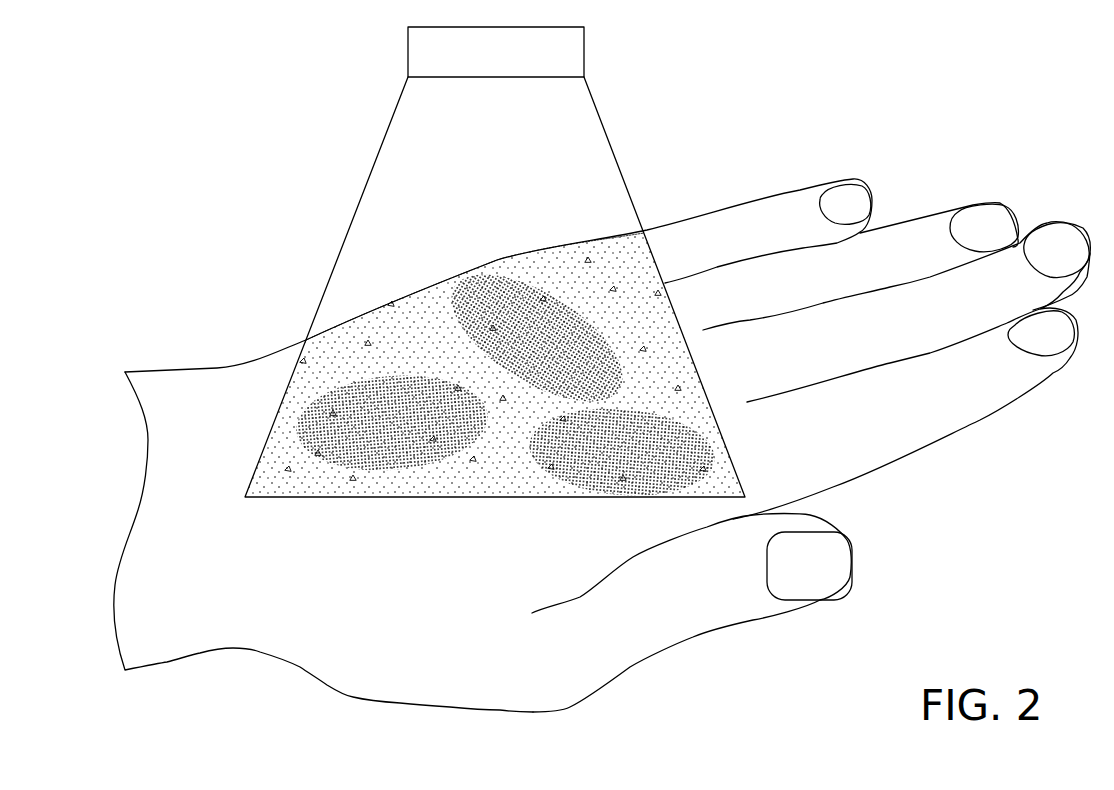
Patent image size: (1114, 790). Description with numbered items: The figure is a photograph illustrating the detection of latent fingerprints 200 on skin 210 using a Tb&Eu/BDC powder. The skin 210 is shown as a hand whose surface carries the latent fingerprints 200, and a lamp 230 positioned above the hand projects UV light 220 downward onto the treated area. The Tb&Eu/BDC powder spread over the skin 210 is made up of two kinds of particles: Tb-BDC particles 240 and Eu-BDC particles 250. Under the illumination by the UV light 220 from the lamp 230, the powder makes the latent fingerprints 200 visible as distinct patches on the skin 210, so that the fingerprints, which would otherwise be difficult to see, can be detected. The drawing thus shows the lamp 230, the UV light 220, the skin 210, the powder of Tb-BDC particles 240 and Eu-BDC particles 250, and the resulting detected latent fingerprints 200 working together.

The latent fingerprints 200 is at (547, 383).
The skin 210 is at (217, 368).
The UV light 220 is at (612, 145).
The lamp 230 is at (585, 52).
The Tb-BDC particles 240 is at (413, 317).
The Eu-BDC particles 250 is at (595, 277).